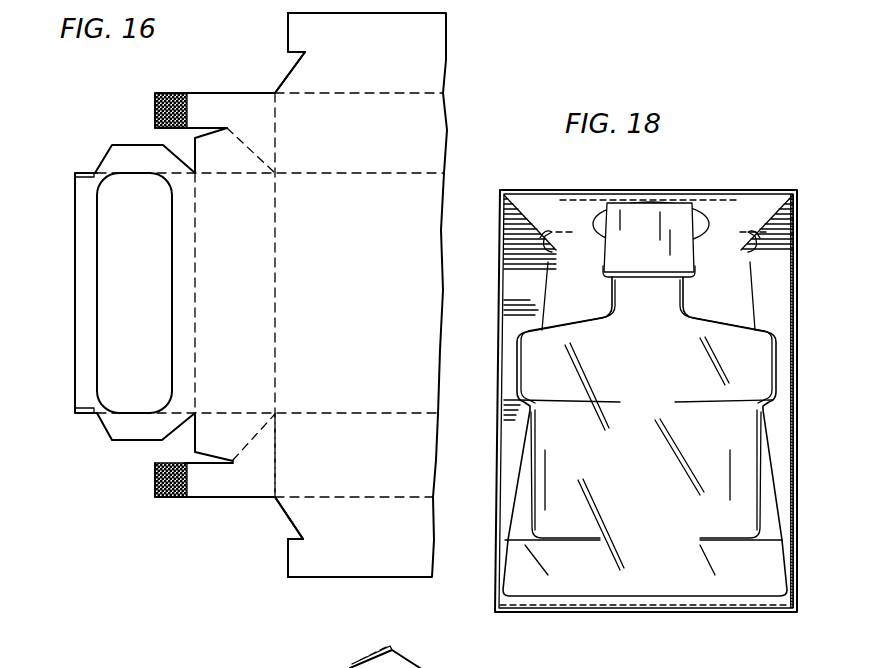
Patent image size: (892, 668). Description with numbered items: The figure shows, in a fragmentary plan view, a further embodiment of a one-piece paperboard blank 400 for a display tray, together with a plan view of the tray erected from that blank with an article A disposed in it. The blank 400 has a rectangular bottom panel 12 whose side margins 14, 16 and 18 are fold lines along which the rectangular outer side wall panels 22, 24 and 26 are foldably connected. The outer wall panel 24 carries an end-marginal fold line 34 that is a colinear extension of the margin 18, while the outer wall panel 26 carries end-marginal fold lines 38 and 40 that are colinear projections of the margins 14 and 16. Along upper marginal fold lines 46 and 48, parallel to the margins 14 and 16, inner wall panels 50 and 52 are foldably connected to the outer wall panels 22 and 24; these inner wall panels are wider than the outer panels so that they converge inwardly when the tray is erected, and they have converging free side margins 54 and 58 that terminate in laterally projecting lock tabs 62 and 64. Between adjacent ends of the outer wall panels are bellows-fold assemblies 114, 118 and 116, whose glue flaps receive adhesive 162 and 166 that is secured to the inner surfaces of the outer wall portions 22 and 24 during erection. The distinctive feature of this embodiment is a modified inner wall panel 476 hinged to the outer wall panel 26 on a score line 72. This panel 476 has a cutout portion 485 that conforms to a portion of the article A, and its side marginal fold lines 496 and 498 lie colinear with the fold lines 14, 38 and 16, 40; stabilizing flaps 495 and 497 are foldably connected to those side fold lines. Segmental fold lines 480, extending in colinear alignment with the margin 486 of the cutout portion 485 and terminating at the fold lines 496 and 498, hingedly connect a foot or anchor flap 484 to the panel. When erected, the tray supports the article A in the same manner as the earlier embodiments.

In FIG. 16, the blank 400 is at (456, 76).
In FIG. 18, the blank 400 is at (762, 184).
In FIG. 16, the bottom panel 12 is at (364, 277).
In FIG. 16, the side margin 14 is at (387, 174).
In FIG. 16, the side margin 16 is at (356, 413).
In FIG. 16, the side margin 18 is at (276, 300).
In FIG. 16, the outer side wall panel 22 is at (376, 140).
In FIG. 16, the outer side wall panel 24 is at (389, 464).
In FIG. 16, the outer side wall panel 26 is at (254, 282).
In FIG. 16, the end-marginal fold line 34 is at (277, 455).
In FIG. 16, the end-marginal fold line 38 is at (236, 177).
In FIG. 16, the end-marginal fold line 40 is at (227, 413).
In FIG. 16, the upper marginal fold line 46 is at (431, 93).
In FIG. 16, the upper marginal fold line 48 is at (368, 497).
In FIG. 16, the inner wall panel 50 is at (386, 60).
In FIG. 16, the inner wall panel 52 is at (391, 552).
In FIG. 16, the converging free side margin 54 is at (288, 78).
In FIG. 16, the converging free side margin 58 is at (292, 528).
In FIG. 16, the lock tab 62 is at (289, 26).
In FIG. 16, the lock tab 64 is at (296, 560).
In FIG. 16, the score or hinge line 72 is at (196, 308).
In FIG. 16, the bellows-fold assembly 114 is at (224, 88).
In FIG. 16, the bellows-fold assembly 116 is at (438, 664).
In FIG. 16, the bellows-fold assembly 118 is at (245, 500).
In FIG. 16, the adhesive 162 is at (178, 102).
In FIG. 16, the adhesive 166 is at (175, 487).
In FIG. 16, the modified inner wall panel 476 is at (185, 242).
In FIG. 16, the segmental fold lines 480 is at (86, 180).
In FIG. 16, the foot or anchor flap 484 is at (80, 280).
In FIG. 16, the cutout portion 485 is at (170, 280).
In FIG. 16, the margin 486 is at (99, 334).
In FIG. 16, the stabilizing flap 495 is at (137, 152).
In FIG. 16, the side marginal fold line 496 is at (160, 170).
In FIG. 16, the stabilizing flap 497 is at (110, 438).
In FIG. 16, the side marginal fold line 498 is at (168, 414).
In FIG. 18, the article A is at (655, 379).